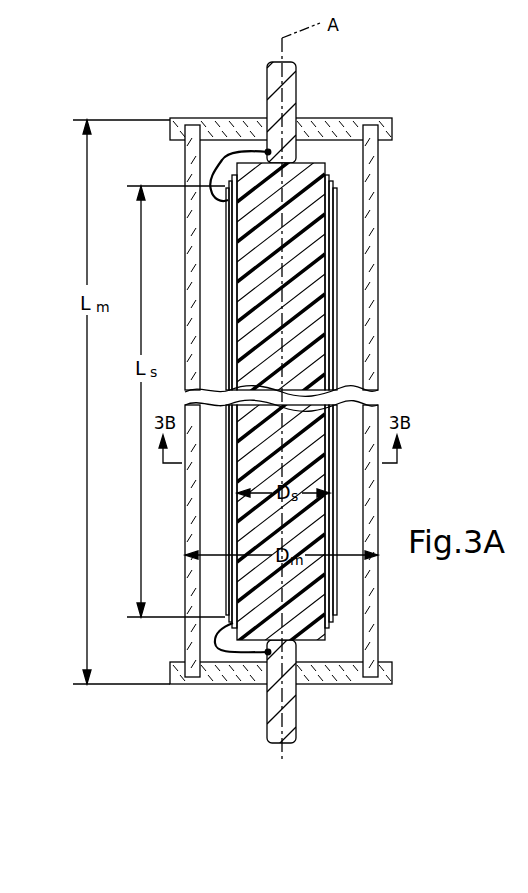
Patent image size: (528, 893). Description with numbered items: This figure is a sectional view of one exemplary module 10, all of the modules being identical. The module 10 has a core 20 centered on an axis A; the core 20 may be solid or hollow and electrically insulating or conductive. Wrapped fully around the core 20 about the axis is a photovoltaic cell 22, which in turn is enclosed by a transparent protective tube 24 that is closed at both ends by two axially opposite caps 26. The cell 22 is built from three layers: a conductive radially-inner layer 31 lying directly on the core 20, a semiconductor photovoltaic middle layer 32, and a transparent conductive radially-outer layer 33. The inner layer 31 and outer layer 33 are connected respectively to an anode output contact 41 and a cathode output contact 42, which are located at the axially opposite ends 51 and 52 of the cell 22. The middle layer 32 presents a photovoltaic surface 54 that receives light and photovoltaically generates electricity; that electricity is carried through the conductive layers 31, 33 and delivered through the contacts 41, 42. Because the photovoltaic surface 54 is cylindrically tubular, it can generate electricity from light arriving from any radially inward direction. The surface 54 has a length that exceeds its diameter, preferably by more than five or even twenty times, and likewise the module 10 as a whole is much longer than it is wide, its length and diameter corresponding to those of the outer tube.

The module 10 is at (407, 100).
The core 20 is at (310, 280).
The photovoltaic cell 22 is at (340, 315).
The transparent protective tube 24 is at (378, 350).
The cap 26 is at (393, 127).
The conductive radially-inner layer 31 is at (329, 182).
The semiconductor photovoltaic middle layer 32 is at (335, 190).
The transparent conductive radially-outer layer 33 is at (338, 208).
The anode output contact 41 is at (292, 717).
The cathode output contact 42 is at (275, 80).
The axially opposite end 51 is at (342, 684).
The axially opposite end 52 is at (328, 118).
The photovoltaic surface 54 is at (337, 238).